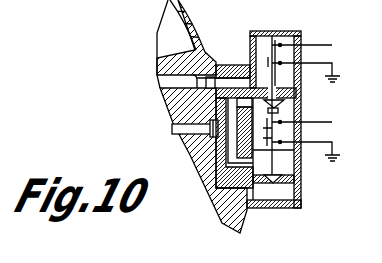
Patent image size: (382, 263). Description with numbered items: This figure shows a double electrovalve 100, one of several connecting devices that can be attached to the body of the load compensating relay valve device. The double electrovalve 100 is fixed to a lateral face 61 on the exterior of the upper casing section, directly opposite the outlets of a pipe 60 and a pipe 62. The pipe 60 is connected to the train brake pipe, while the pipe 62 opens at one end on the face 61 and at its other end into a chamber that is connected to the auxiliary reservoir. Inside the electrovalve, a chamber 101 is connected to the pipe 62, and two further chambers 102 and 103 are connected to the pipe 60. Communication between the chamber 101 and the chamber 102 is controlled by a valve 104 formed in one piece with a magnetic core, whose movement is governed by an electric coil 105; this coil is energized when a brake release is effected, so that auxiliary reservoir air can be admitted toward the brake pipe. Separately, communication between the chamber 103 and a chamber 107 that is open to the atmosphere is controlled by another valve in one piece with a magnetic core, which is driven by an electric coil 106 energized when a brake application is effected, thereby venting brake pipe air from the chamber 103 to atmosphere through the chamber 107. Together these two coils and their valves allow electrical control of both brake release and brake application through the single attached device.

The pipe 60 is at (215, 130).
The lateral face 61 is at (221, 73).
The pipe 62 is at (206, 83).
The double electrovalve 100 is at (289, 30).
The chamber 101 is at (252, 57).
The chamber 102 is at (290, 99).
The chamber 103 is at (285, 167).
The valve 104 is at (286, 106).
The electric coil 105 is at (272, 55).
The electric coil 106 is at (290, 130).
The chamber 107 is at (258, 200).